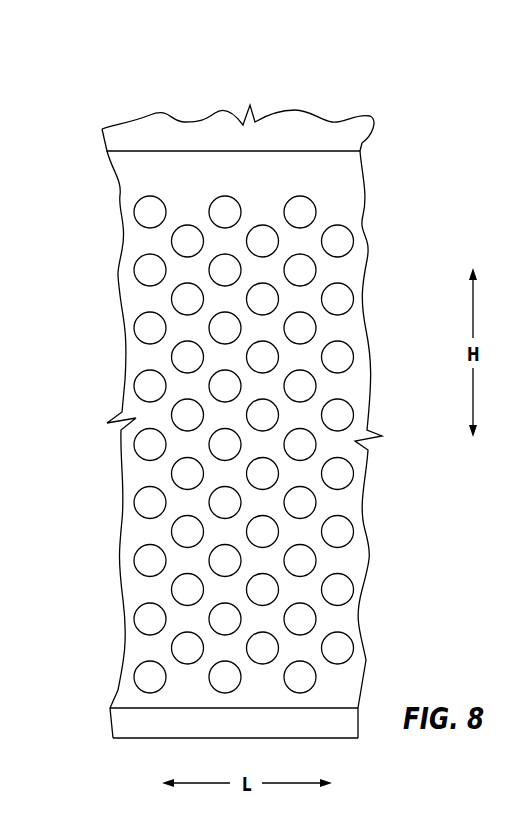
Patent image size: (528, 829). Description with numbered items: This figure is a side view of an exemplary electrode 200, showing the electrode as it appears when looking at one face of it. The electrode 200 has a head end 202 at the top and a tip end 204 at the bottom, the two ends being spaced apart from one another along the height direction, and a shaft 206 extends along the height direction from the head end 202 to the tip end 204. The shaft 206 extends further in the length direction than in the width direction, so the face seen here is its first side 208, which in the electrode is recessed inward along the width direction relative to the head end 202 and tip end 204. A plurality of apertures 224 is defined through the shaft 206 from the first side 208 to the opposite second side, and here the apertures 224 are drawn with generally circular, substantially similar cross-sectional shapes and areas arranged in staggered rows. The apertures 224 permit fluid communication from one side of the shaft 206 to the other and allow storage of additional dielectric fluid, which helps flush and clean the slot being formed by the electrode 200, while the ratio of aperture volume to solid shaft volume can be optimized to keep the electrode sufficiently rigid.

The electrode 200 is at (133, 91).
The head end 202 is at (305, 130).
The tip end 204 is at (320, 728).
The shaft 206 is at (137, 477).
The first side 208 is at (338, 176).
The apertures 224 is at (341, 352).